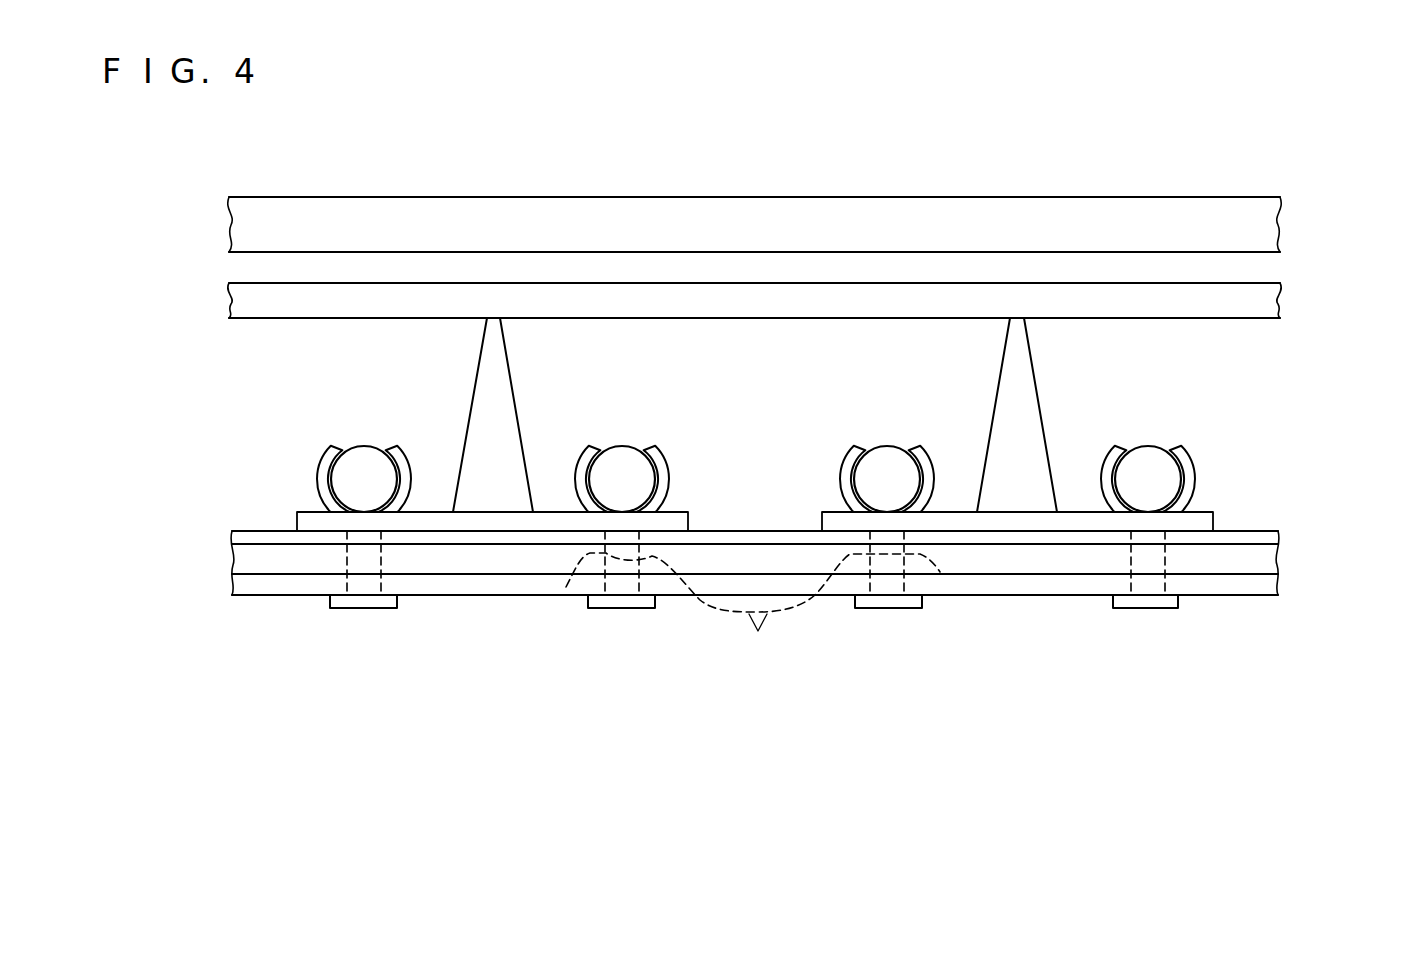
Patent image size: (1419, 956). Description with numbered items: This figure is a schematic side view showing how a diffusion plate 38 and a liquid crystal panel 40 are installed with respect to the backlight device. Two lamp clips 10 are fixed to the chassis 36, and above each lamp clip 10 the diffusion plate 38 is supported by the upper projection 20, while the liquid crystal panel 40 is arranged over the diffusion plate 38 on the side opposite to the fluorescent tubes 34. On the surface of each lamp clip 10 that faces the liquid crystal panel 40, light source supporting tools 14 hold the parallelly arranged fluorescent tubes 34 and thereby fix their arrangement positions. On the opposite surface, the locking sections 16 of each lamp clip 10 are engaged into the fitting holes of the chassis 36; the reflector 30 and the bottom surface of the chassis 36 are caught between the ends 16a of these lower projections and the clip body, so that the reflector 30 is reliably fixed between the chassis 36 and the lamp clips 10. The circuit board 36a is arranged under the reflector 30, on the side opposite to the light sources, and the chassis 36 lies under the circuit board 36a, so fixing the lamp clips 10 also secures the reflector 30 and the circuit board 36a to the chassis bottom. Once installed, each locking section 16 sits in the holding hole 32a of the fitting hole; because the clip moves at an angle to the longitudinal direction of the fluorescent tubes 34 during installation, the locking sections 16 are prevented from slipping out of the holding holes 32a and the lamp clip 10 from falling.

The lamp clip 10 is at (443, 414).
The light source supporting tool 14 is at (318, 468).
The locking section 16 is at (566, 587).
The end of the lower projection 16a is at (640, 610).
The upper projection 20 is at (491, 397).
The reflector 30 is at (262, 538).
The holding hole 32a is at (753, 616).
The fluorescent tube 34 is at (364, 462).
The chassis 36 is at (743, 565).
The circuit board 36a is at (250, 562).
The diffusion plate 38 is at (1255, 297).
The liquid crystal panel 40 is at (1245, 223).